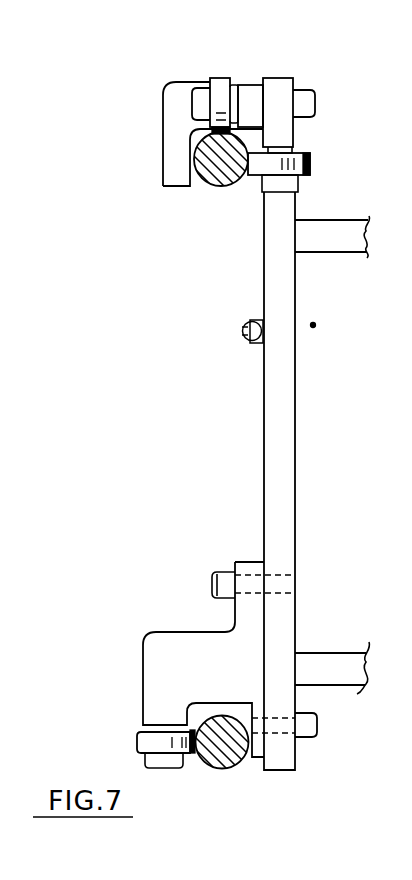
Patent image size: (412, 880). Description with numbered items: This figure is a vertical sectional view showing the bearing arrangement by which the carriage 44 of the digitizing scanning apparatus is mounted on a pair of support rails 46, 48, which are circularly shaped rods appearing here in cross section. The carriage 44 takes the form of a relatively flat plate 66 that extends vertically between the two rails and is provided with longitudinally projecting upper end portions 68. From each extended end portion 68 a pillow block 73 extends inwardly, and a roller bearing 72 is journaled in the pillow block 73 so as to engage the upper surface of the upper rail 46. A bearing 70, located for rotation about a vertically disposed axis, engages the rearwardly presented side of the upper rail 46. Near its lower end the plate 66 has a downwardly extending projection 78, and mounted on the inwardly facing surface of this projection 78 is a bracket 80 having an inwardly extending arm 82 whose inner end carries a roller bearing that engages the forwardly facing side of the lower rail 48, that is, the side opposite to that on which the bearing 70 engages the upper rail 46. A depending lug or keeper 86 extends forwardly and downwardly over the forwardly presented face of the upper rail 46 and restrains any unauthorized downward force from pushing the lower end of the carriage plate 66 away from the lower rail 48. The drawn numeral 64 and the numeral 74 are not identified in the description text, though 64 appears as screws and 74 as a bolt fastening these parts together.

The carriage 44 is at (256, 427).
The upper support rail 46 is at (218, 187).
The lower support rail 48 is at (223, 767).
The screws 64 is at (251, 342).
The flat plate 66 is at (282, 455).
The upper end portion 68 is at (277, 120).
The bearing 70 is at (310, 163).
The roller bearing 72 is at (222, 85).
The pillow block 73 is at (245, 102).
The bolt 74 is at (137, 743).
The downwardly extending projection 78 is at (280, 747).
The bracket 80 is at (243, 650).
The arm 82 is at (172, 648).
The keeper 86 is at (172, 153).